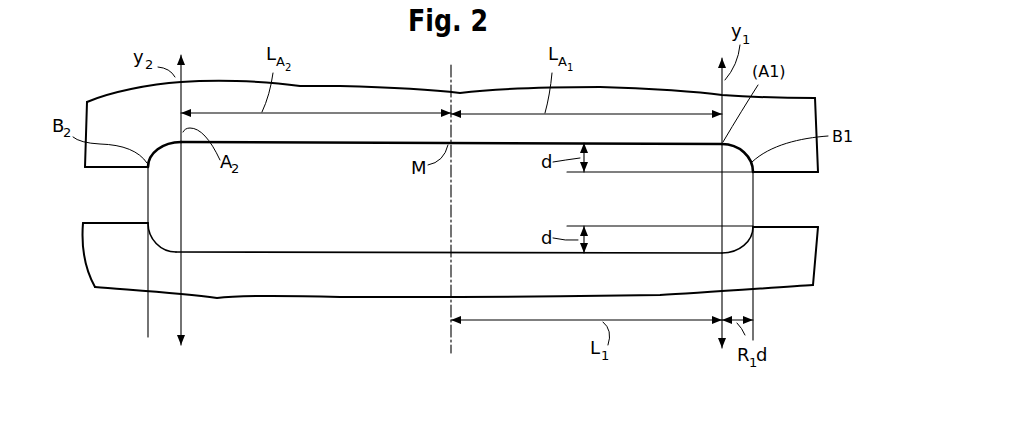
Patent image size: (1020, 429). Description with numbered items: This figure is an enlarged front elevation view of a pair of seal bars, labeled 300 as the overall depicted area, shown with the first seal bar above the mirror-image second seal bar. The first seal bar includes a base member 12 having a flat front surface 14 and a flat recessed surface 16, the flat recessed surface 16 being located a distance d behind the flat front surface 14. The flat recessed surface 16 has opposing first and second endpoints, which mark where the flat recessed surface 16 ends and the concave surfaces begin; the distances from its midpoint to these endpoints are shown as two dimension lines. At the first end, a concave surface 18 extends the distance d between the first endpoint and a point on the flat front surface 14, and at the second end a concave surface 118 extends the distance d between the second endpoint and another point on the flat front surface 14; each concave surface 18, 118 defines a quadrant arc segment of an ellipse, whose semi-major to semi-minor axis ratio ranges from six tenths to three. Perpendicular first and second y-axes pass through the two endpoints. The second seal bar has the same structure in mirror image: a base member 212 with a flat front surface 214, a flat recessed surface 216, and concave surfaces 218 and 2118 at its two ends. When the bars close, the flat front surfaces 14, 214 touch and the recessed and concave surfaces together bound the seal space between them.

The pin / shaft assembly 300 is at (640, 50).
The base member 12 is at (212, 90).
The flat front surface 14 is at (100, 168).
The flat recessed surface 16 is at (300, 147).
The concave surface 18 is at (755, 170).
The concave surface 118 is at (157, 143).
The base member 212 is at (220, 290).
The flat front surface 214 is at (100, 223).
The flat recessed surface 216 is at (275, 249).
The concave surface 218 is at (740, 252).
The concave surface 2118 is at (163, 250).